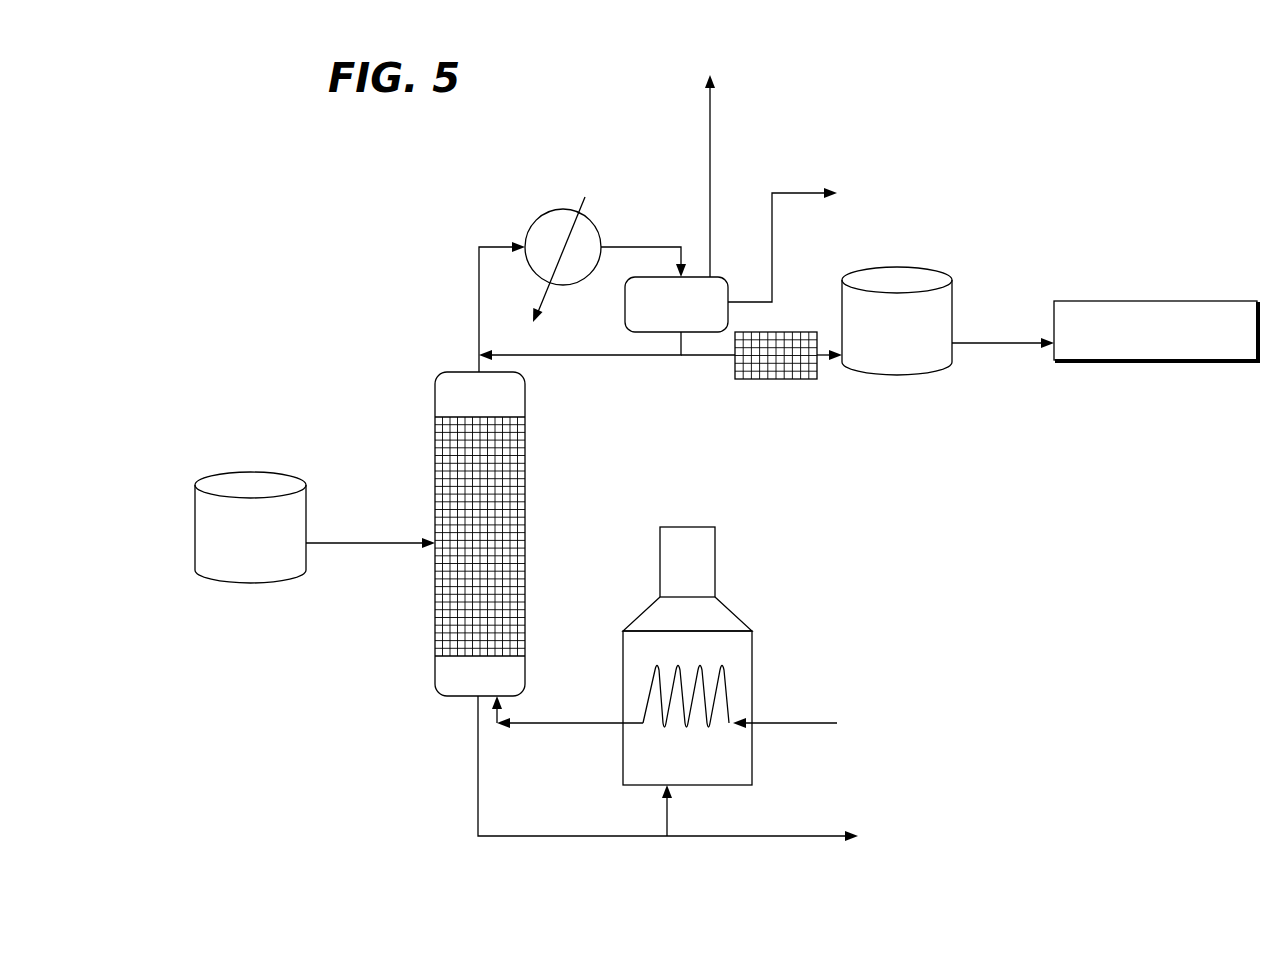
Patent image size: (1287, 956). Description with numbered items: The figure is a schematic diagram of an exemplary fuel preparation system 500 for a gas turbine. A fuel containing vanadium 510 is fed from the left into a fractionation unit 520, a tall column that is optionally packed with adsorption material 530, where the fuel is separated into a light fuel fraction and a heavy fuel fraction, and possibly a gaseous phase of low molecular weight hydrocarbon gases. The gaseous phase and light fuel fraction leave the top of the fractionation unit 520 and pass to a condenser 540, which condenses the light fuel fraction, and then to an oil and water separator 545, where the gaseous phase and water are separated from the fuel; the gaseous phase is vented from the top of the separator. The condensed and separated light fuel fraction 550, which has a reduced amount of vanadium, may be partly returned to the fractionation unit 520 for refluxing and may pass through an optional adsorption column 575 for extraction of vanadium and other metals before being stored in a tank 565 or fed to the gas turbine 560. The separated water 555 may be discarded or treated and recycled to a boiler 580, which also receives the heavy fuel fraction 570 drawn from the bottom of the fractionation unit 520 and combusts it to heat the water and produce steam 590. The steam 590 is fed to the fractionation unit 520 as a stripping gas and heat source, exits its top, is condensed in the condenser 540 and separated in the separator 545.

The fuel preparation system 500 is at (895, 130).
The fuel containing vanadium 510 is at (228, 549).
The fractionation unit 520 is at (460, 403).
The adsorption material 530 is at (435, 450).
The condenser 540 is at (601, 210).
The oil and water separator 545 is at (654, 311).
The light fuel fraction 550 is at (560, 357).
The water 555 is at (789, 460).
The gas turbine 560 is at (1131, 345).
The tank 565 is at (871, 335).
The heavy fuel fraction 570 is at (478, 745).
The adsorption column 575 is at (818, 375).
The boiler 580 is at (666, 623).
The steam 590 is at (603, 724).